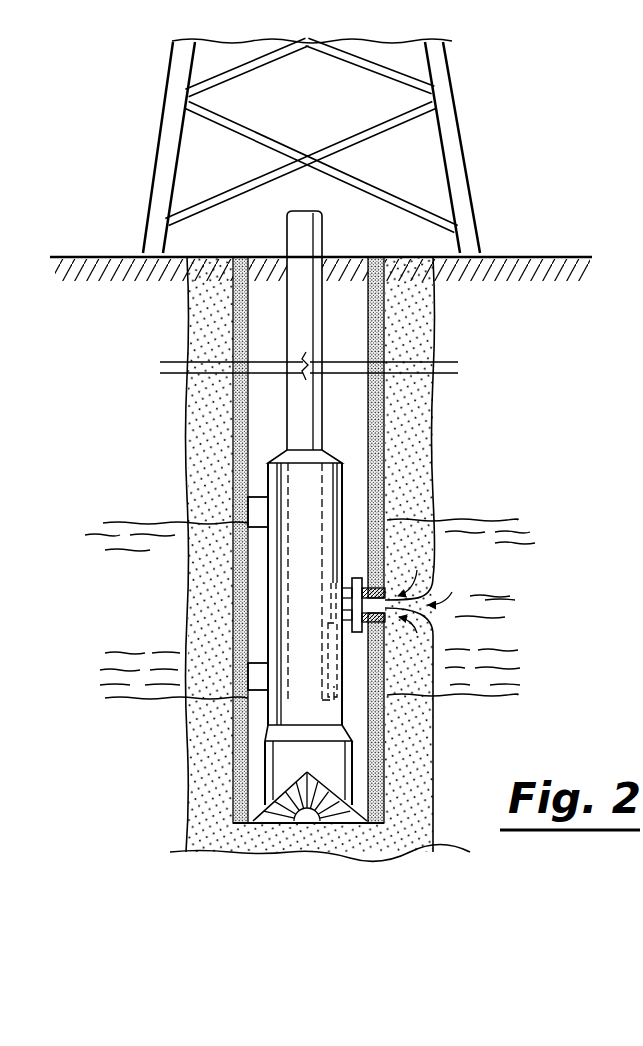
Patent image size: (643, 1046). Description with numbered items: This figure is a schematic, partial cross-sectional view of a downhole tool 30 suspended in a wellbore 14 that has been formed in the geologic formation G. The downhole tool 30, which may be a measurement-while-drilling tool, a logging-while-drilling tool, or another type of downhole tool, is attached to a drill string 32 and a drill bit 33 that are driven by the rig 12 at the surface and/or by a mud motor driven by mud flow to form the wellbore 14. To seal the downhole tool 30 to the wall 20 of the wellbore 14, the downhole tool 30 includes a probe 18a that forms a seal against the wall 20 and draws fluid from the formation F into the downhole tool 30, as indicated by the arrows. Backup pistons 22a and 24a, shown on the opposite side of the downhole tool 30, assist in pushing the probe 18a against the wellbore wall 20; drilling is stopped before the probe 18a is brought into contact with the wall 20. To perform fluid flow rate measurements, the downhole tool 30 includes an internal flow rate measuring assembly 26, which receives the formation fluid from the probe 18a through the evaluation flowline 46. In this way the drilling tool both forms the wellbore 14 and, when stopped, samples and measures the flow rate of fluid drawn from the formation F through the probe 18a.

The rig 12 is at (462, 142).
The wellbore 14 is at (368, 274).
The drill string 32 is at (283, 311).
The backup piston 22a is at (257, 495).
The backup piston 24a is at (257, 660).
The downhole tool 30 is at (348, 499).
The probe 18a is at (365, 585).
The evaluation flowline 46 is at (327, 630).
The flow rate measuring assembly 26 is at (317, 660).
The wall 20 is at (390, 660).
The drill bit 33 is at (257, 807).
The formation F is at (110, 675).
The geologic formation G is at (508, 477).